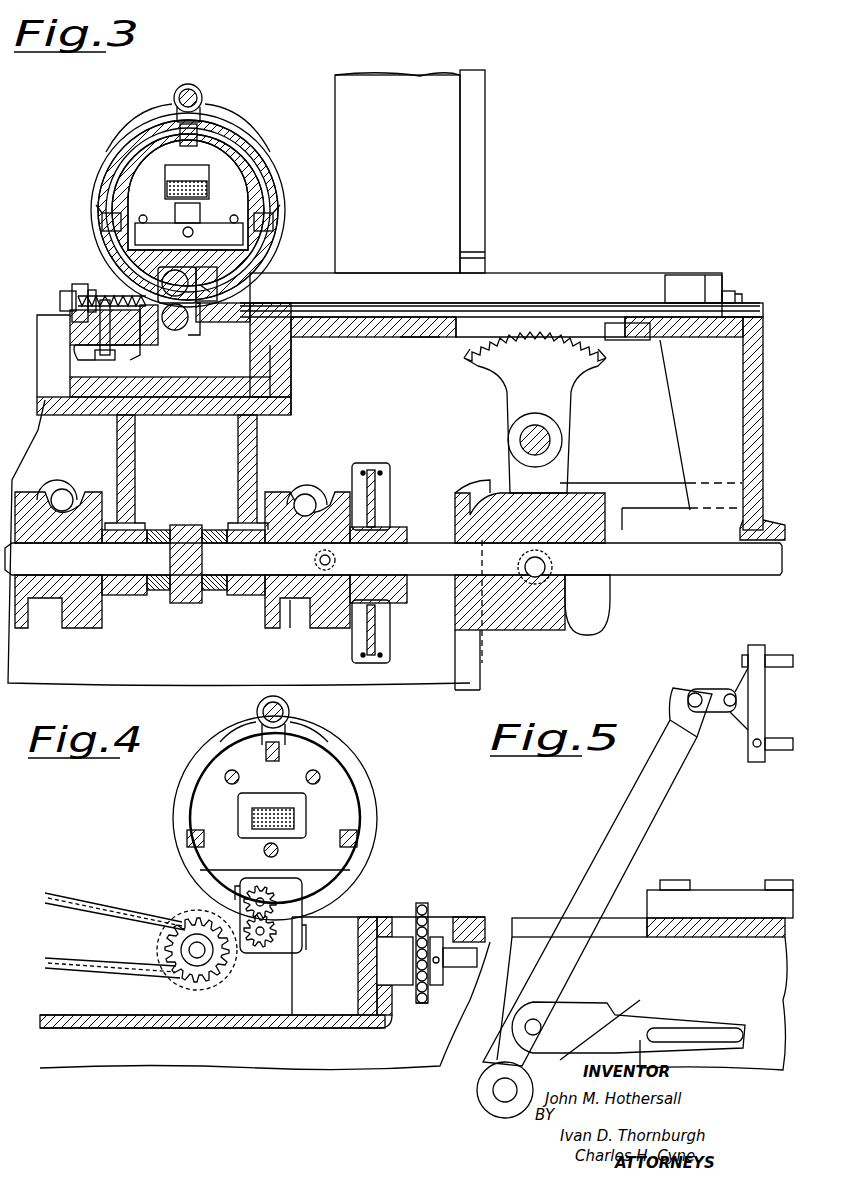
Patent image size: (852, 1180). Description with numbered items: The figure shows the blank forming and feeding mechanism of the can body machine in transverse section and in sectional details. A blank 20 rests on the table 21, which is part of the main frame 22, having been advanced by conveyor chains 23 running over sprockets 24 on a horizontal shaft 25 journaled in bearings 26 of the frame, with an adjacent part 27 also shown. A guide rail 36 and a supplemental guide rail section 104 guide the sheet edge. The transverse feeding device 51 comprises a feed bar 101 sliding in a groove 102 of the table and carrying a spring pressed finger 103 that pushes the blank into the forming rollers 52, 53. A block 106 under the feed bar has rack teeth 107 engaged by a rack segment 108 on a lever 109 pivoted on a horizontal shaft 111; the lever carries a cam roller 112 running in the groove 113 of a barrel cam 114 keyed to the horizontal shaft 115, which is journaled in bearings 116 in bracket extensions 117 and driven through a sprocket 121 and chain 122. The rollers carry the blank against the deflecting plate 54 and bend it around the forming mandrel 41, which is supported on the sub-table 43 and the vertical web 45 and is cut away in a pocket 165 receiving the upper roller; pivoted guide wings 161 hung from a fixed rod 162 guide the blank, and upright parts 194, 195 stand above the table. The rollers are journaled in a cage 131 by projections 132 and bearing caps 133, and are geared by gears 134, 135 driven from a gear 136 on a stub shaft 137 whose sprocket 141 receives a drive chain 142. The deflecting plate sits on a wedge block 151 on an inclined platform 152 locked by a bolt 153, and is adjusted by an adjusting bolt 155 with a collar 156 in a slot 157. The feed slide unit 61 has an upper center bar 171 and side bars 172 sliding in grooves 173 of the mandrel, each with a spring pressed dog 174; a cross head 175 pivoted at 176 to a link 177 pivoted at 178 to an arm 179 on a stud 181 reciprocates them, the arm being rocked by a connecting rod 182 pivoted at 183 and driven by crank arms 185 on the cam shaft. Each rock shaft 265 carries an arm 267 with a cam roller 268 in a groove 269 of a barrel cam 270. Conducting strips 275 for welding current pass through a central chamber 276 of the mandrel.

In FIG. 3, the blank 20 is at (365, 302).
In FIG. 3, the table 21 is at (413, 338).
In FIG. 3, the main frame 22 is at (662, 509).
In FIG. 4, the main frame 22 is at (476, 917).
In FIG. 4, the conveyor chains 23 is at (422, 1004).
In FIG. 4, the sprockets 24 is at (440, 935).
In FIG. 4, the horizontal shaft 25 is at (462, 968).
In FIG. 4, the bearings 26 is at (395, 985).
In FIG. 4, the worm 27 is at (425, 905).
In FIG. 3, the guide rail 36 is at (588, 282).
In FIG. 3, the forming mandrel 41 is at (130, 160).
In FIG. 3, the sub-table 43 is at (60, 405).
In FIG. 4, the sub-table 43 is at (195, 1028).
In FIG. 3, the vertical web 45 is at (655, 395).
In FIG. 3, the transverse feeding device 51 is at (540, 304).
In FIG. 3, the upper forming roller 52 is at (160, 291).
In FIG. 4, the upper forming roller 52 is at (268, 895).
In FIG. 3, the lower forming roller 53 is at (190, 327).
In FIG. 4, the lower forming roller 53 is at (278, 948).
In FIG. 3, the deflecting plate 54 is at (150, 300).
In FIG. 3, the feed slide unit 61 is at (205, 128).
In FIG. 3, the feed bar 101 is at (617, 322).
In FIG. 3, the groove 102 is at (748, 310).
In FIG. 3, the spring pressed finger 103 is at (668, 295).
In FIG. 3, the supplemental guide rail section 104 is at (735, 296).
In FIG. 3, the block 106 is at (508, 322).
In FIG. 3, the rack teeth 107 is at (470, 348).
In FIG. 3, the rack segment 108 is at (596, 354).
In FIG. 3, the lever 109 is at (510, 393).
In FIG. 3, the horizontal shaft 111 is at (551, 440).
In FIG. 3, the cam roller 112 is at (553, 567).
In FIG. 3, the groove 113 is at (582, 637).
In FIG. 3, the barrel cam 114 is at (530, 631).
In FIG. 3, the horizontal shaft 115 is at (715, 603).
In FIG. 3, the bearings 116 is at (122, 597).
In FIG. 3, the bracket extensions 117 is at (136, 450).
In FIG. 3, the sprocket 121 is at (378, 500).
In FIG. 3, the chain 122 is at (378, 640).
In FIG. 3, the cage 131 is at (292, 372).
In FIG. 4, the cage 131 is at (352, 920).
In FIG. 3, the projection 132 is at (140, 281).
In FIG. 4, the projection 132 is at (252, 880).
In FIG. 3, the bearing cap 133 is at (214, 281).
In FIG. 4, the gear 134 is at (302, 890).
In FIG. 4, the gear 135 is at (280, 937).
In FIG. 4, the gear 136 is at (225, 975).
In FIG. 4, the stub shaft 137 is at (210, 955).
In FIG. 4, the sprocket 141 is at (150, 964).
In FIG. 4, the drive chain 142 is at (72, 895).
In FIG. 3, the wedge block 151 is at (70, 325).
In FIG. 3, the inclined platform 152 is at (152, 332).
In FIG. 3, the bolt 153 is at (108, 360).
In FIG. 3, the adjusting bolt 155 is at (60, 296).
In FIG. 3, the collar 156 is at (90, 292).
In FIG. 3, the slot 157 is at (74, 288).
In FIG. 3, the guide wings 161 is at (272, 158).
In FIG. 4, the guide wings 161 is at (222, 745).
In FIG. 3, the fixed rod 162 is at (189, 84).
In FIG. 4, the fixed rod 162 is at (290, 712).
In FIG. 3, the pocket 165 is at (217, 272).
In FIG. 3, the upper center bar 171 is at (172, 122).
In FIG. 4, the upper center bar 171 is at (272, 762).
In FIG. 5, the upper center bar 171 is at (780, 656).
In FIG. 3, the side bars 172 is at (98, 208).
In FIG. 4, the side bars 172 is at (187, 840).
In FIG. 5, the side bars 172 is at (780, 752).
In FIG. 3, the grooves 173 is at (248, 140).
In FIG. 3, the spring pressed dog 174 is at (210, 112).
In FIG. 4, the spring pressed dog 174 is at (360, 845).
In FIG. 5, the cross head 175 is at (765, 705).
In FIG. 5, the pivot 176 is at (733, 714).
In FIG. 5, the link 177 is at (716, 689).
In FIG. 5, the pivot 178 is at (690, 697).
In FIG. 5, the arm 179 is at (645, 822).
In FIG. 5, the stud 181 is at (494, 1092).
In FIG. 3, the connecting rod 182 is at (182, 525).
In FIG. 5, the connecting rod 182 is at (635, 1014).
In FIG. 5, the pivot 183 is at (536, 1019).
In FIG. 3, the crank arms 185 is at (215, 530).
In FIG. 3, the bar 194 is at (450, 175).
In FIG. 3, the bar 195 is at (485, 148).
In FIG. 3, the rock shaft 265 is at (64, 488).
In FIG. 3, the arm 267 is at (45, 485).
In FIG. 3, the cam roller 268 is at (337, 560).
In FIG. 3, the groove 269 is at (330, 628).
In FIG. 3, the barrel cam 270 is at (80, 628).
In FIG. 3, the electrical conducting strips 275 is at (209, 188).
In FIG. 4, the electrical conducting strips 275 is at (308, 812).
In FIG. 3, the central chamber 276 is at (145, 180).